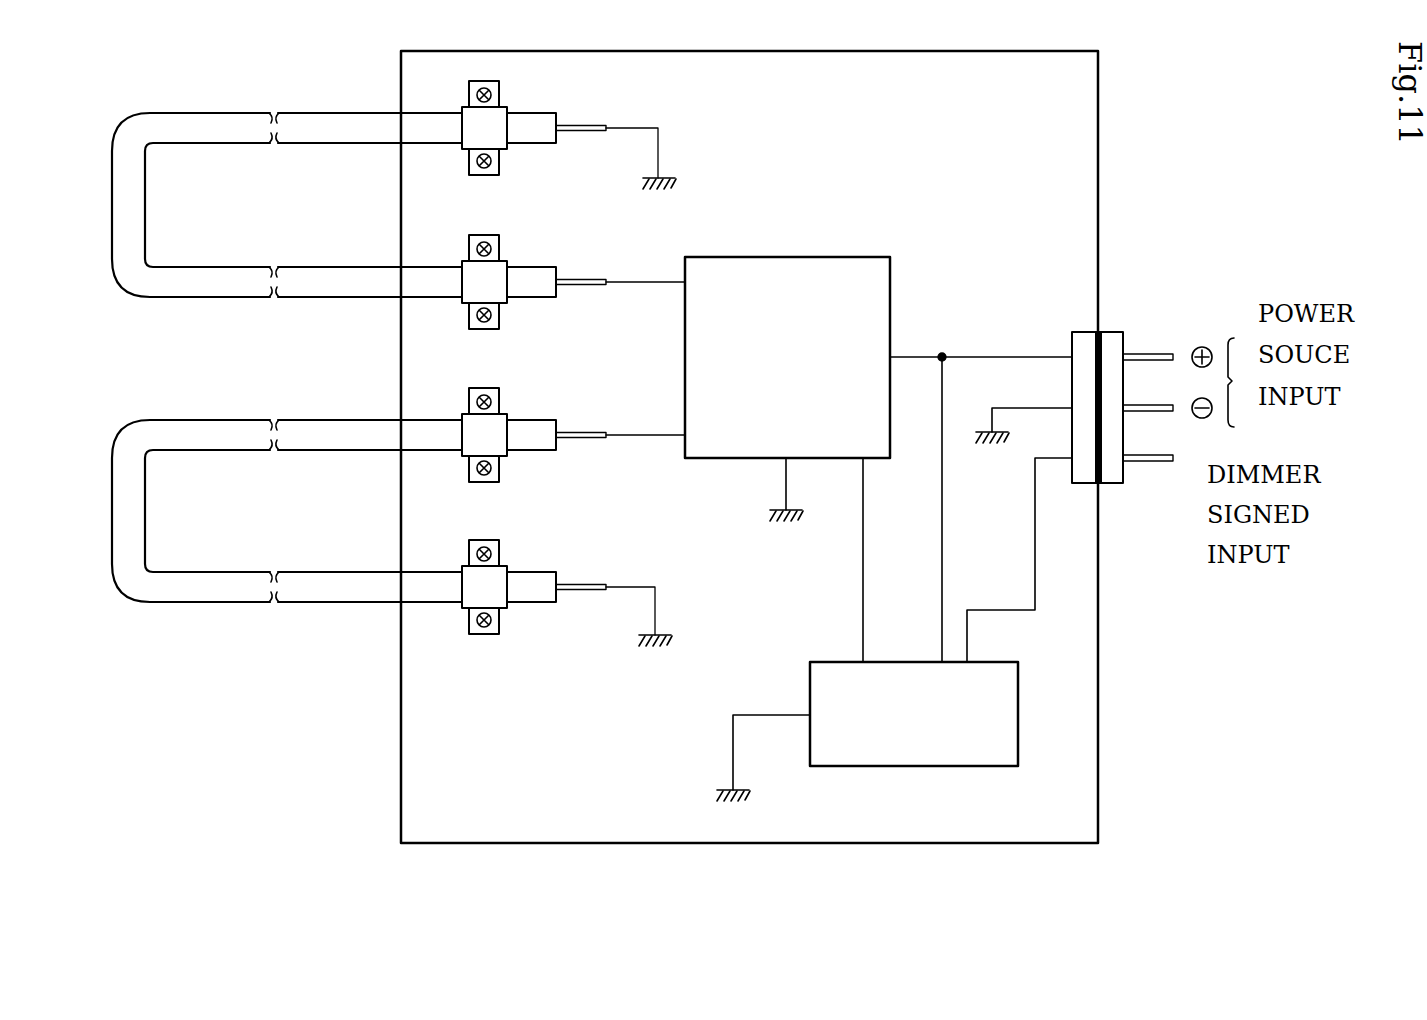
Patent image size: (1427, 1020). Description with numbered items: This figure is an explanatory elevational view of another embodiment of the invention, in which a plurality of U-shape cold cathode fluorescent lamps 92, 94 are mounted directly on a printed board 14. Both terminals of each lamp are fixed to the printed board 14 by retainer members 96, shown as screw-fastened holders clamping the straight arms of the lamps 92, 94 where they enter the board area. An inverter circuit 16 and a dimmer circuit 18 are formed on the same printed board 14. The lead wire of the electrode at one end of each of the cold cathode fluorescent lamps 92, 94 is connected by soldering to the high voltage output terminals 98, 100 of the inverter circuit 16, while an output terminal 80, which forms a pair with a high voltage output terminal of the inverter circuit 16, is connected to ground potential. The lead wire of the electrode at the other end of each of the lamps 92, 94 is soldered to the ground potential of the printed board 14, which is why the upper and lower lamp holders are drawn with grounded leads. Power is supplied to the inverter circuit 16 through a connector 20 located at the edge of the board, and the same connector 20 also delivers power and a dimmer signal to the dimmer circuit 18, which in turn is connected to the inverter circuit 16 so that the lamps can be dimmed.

The printed board 14 is at (1098, 695).
The inverter circuit 16 is at (870, 257).
The dimmer circuit 18 is at (960, 766).
The connector 20 is at (1110, 483).
The output terminal 80 is at (786, 508).
The U-shape cold cathode fluorescent lamp 92 is at (212, 118).
The U-shape cold cathode fluorescent lamp 94 is at (195, 425).
The retainer member 96 is at (499, 83).
The high voltage output terminal 98 is at (606, 282).
The high voltage output terminal 100 is at (606, 434).